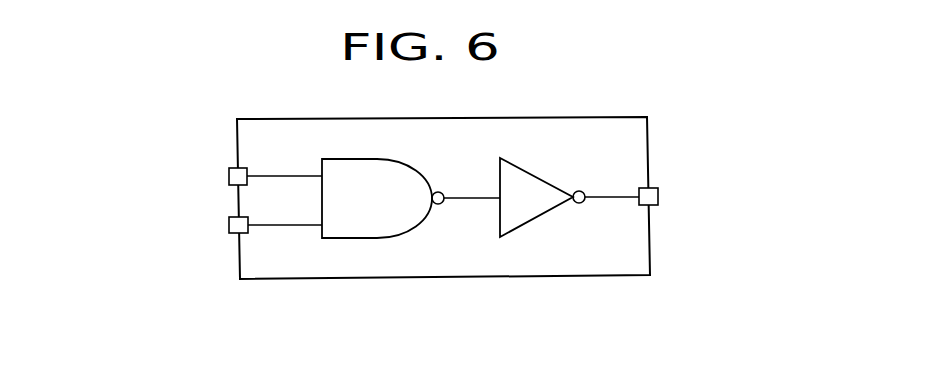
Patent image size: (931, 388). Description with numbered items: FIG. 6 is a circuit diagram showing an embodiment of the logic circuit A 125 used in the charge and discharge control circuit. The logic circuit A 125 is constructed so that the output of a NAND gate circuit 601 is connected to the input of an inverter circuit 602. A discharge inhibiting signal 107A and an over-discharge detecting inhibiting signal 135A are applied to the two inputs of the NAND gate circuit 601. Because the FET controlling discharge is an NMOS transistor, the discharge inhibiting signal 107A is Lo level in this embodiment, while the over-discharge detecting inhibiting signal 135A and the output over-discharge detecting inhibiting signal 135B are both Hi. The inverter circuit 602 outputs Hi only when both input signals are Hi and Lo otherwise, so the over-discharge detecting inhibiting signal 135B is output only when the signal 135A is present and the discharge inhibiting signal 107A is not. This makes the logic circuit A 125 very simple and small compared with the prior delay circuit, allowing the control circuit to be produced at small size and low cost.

The logic circuit A 125 is at (473, 277).
The discharge inhibiting signal 107A is at (226, 176).
The over-discharge detecting inhibiting signal 135A is at (226, 226).
The over-discharge detecting inhibiting signal 135B is at (658, 196).
The NAND gate circuit 601 is at (377, 238).
The inverter circuit 602 is at (557, 215).